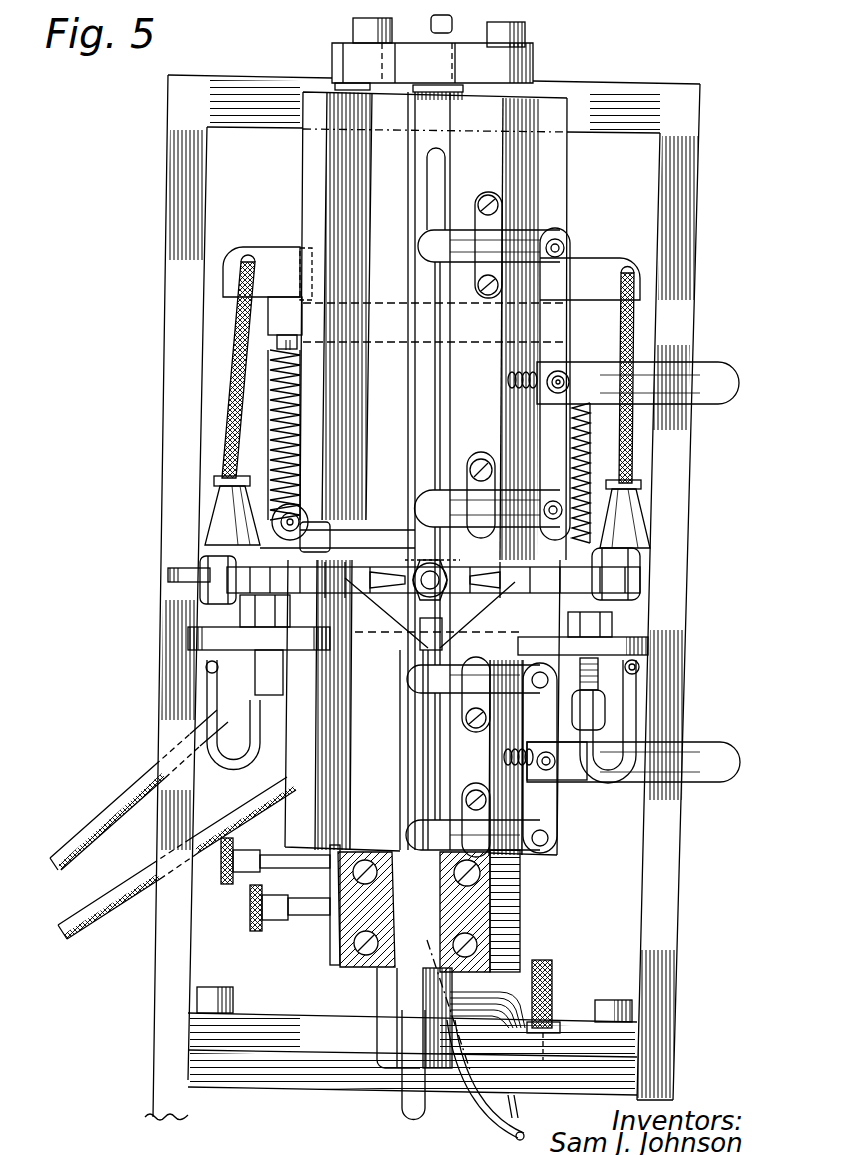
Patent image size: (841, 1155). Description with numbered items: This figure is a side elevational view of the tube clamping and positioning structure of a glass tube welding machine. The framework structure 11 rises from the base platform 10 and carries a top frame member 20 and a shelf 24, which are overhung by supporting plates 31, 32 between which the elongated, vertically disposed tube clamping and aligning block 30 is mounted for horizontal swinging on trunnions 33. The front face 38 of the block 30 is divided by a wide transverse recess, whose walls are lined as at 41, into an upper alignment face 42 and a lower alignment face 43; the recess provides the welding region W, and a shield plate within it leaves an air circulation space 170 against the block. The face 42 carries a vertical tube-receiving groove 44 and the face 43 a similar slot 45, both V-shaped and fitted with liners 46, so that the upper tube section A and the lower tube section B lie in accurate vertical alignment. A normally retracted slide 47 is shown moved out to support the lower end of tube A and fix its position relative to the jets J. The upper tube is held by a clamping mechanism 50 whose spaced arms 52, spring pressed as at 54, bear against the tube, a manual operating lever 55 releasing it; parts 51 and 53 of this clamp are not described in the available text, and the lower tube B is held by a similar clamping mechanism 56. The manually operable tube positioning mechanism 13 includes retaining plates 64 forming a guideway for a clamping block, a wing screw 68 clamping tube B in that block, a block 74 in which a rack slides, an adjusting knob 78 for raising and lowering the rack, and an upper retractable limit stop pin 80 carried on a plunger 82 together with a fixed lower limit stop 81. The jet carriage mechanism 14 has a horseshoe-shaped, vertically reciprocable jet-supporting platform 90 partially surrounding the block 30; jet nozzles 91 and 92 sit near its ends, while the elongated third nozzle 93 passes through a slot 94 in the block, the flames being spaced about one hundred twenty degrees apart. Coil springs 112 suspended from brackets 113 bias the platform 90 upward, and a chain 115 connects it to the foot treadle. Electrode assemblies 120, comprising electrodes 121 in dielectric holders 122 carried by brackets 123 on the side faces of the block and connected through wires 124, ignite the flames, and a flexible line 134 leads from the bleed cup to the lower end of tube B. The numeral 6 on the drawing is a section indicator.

The section line 6 is at (398, 437).
The base platform 10 is at (376, 845).
The framework structure 11 is at (700, 200).
The tube positioning mechanism 13 is at (305, 983).
The jet carriage mechanism 14 is at (655, 645).
The top frame member 20 is at (618, 128).
The shelf 24 is at (303, 1085).
The tube clamping and aligning block 30 is at (303, 155).
The supporting plate 31 is at (535, 58).
The supporting plate 32 is at (300, 1030).
The trunnions 33 is at (458, 58).
The front face 38 is at (400, 262).
The lining 41 is at (325, 662).
The upper alignment face 42 is at (375, 175).
The lower alignment face 43 is at (365, 700).
The tube-receiving groove 44 is at (445, 148).
The tube-receiving slot 45 is at (400, 768).
The liners 46 is at (450, 190).
The slide 47 is at (170, 580).
The clamping mechanism 50 is at (545, 292).
The slide bar 51 is at (545, 318).
The spaced arms 52 is at (530, 232).
The bracket 53 is at (500, 215).
The spring 54 is at (508, 374).
The manual operating lever 55 is at (715, 365).
The clamping mechanism 56 is at (552, 792).
The retaining plates 64 is at (485, 925).
The wing screw 68 is at (440, 900).
The block 74 is at (377, 1036).
The adjusting knob 78 is at (553, 968).
The upper limit stop pin 80 is at (306, 868).
The lower limit stop member 81 is at (304, 915).
The plunger 82 is at (228, 884).
The jet-supporting platform 90 is at (190, 638).
The jet nozzle 91 is at (405, 575).
The jet nozzle 92 is at (480, 575).
The third jet nozzle 93 is at (445, 572).
The slot 94 is at (410, 558).
The coil springs 112 is at (300, 420).
The brackets 113 is at (350, 344).
The chain 115 is at (520, 1110).
The electrode assemblies 120 is at (215, 512).
The electrodes 121 is at (390, 612).
The dielectric holders 122 is at (635, 520).
The brackets 123 is at (298, 505).
The wires 124 is at (232, 415).
The flexible line 134 is at (400, 1098).
The air circulation space 170 is at (335, 522).
The upper tube section A is at (431, 20).
The lower tube section B is at (415, 738).
The jets J is at (205, 600).
The welding location W is at (355, 549).